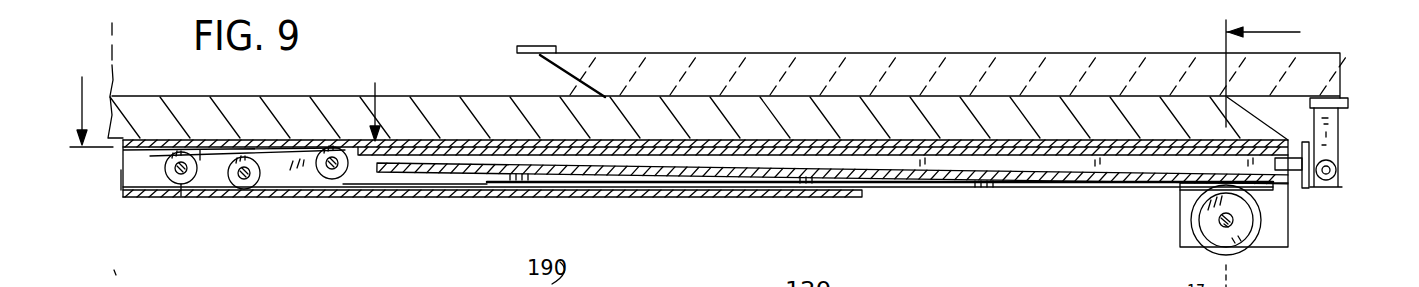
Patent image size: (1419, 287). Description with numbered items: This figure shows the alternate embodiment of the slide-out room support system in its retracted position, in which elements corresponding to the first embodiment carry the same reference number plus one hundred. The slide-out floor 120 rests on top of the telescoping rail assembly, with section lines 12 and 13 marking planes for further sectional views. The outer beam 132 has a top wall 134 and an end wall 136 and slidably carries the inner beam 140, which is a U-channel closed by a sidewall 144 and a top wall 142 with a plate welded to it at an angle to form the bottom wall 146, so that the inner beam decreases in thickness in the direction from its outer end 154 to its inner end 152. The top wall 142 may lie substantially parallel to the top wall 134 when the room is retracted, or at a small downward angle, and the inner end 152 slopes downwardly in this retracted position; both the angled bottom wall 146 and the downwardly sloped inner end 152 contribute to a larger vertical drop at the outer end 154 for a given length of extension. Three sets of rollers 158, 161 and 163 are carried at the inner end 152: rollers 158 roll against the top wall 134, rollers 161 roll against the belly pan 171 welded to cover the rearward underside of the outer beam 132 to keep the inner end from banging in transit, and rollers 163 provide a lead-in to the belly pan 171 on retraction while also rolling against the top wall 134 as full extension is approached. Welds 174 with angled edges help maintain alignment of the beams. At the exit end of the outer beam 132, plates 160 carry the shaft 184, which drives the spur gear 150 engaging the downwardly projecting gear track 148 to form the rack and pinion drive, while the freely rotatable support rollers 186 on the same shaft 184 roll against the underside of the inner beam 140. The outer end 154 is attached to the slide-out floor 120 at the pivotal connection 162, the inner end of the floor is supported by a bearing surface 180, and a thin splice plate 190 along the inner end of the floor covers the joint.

The section line 12- 12 is at (1247, 73).
The section line 13- 13 is at (227, 99).
The slide-out floor 120 is at (838, 38).
The outer beam 132 is at (123, 162).
The top wall of outer beam 134 is at (420, 137).
The outer rail end wall 136 is at (122, 182).
The inner beam 140 is at (1065, 190).
The top wall of inner beam 142 is at (1093, 178).
The sidewall 144 is at (213, 175).
The bottom wall of inner beam 146 is at (463, 170).
The gear track 148 is at (1017, 188).
The spur gear 150 is at (1192, 215).
The inner end of inner beam 152 is at (165, 167).
The outer end of inner beam 154 is at (1343, 184).
The rollers 158 is at (340, 182).
The plates 160 is at (1180, 235).
The rollers 161 is at (245, 183).
The pivotal connection 162 is at (1340, 165).
The rollers 163 is at (188, 180).
The belly pan 171 is at (595, 197).
The welds 174 is at (262, 100).
The bearing surface 180 is at (560, 70).
The shaft 184 is at (1233, 216).
The support rollers 186 is at (1245, 248).
The splice plate 190 is at (519, 45).